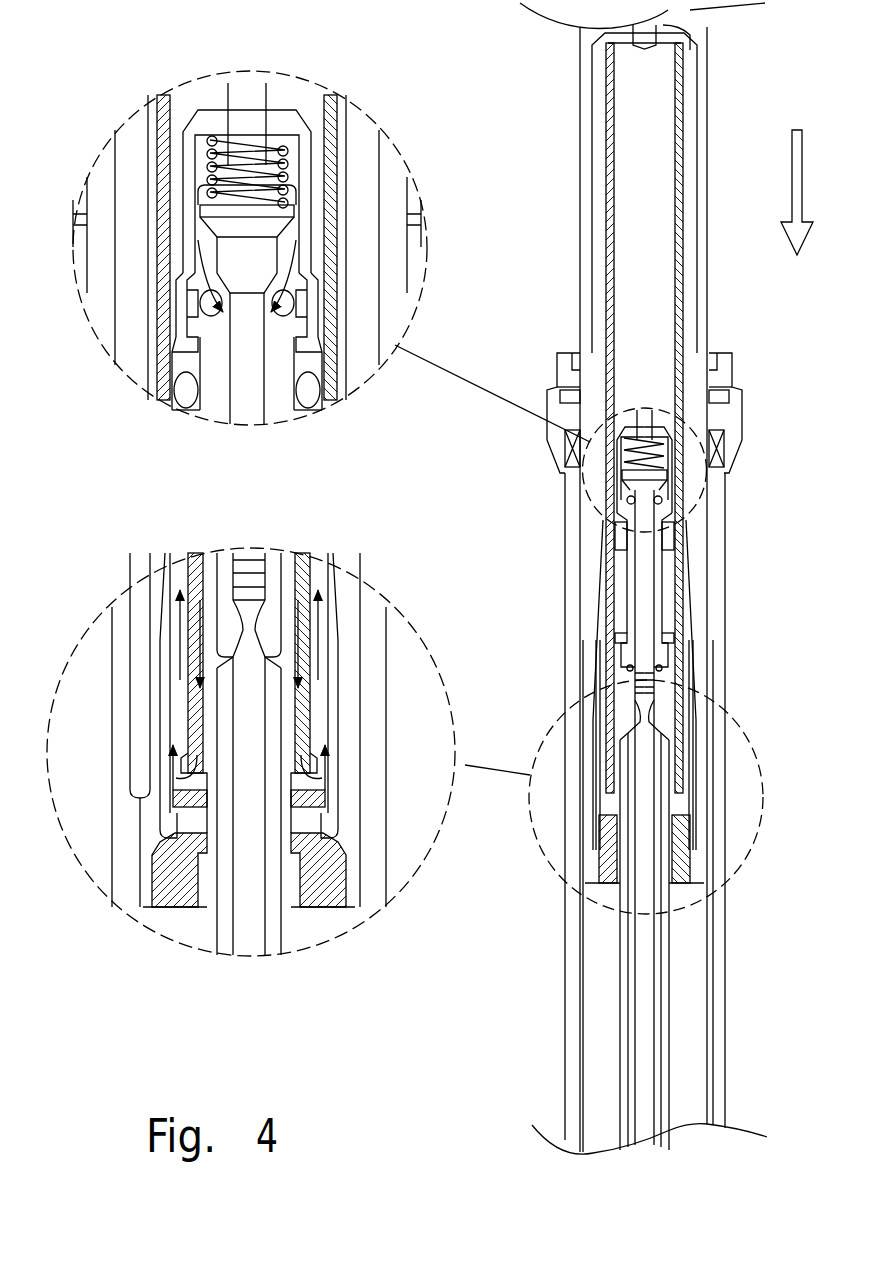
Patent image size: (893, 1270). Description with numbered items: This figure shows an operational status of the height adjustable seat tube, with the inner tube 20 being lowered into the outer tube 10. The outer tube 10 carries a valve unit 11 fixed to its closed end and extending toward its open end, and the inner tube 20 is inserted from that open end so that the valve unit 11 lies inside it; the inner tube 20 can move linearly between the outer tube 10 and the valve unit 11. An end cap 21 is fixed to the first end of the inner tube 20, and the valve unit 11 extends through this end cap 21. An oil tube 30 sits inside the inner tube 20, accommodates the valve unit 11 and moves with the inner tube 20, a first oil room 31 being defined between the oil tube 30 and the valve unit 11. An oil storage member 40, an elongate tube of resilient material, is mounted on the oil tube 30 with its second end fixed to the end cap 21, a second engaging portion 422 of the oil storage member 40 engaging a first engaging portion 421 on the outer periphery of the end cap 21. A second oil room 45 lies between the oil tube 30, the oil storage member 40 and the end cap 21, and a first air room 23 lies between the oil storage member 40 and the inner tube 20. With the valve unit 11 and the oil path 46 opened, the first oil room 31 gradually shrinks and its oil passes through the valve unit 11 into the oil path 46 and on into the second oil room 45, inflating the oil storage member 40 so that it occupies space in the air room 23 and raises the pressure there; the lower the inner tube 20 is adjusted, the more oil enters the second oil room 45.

The outer tube 10 is at (735, 1008).
The valve unit 11 is at (288, 123).
The inner tube 20 is at (708, 165).
The end cap 21 is at (323, 885).
The first air room 23 is at (600, 557).
The oil tube 30 is at (683, 618).
The first oil room 31 is at (630, 172).
The oil storage member 40 is at (682, 320).
The second oil room 45 is at (322, 713).
The oil path 46 is at (177, 672).
The first engaging portion 421 is at (158, 877).
The second engaging portion 422 is at (168, 830).